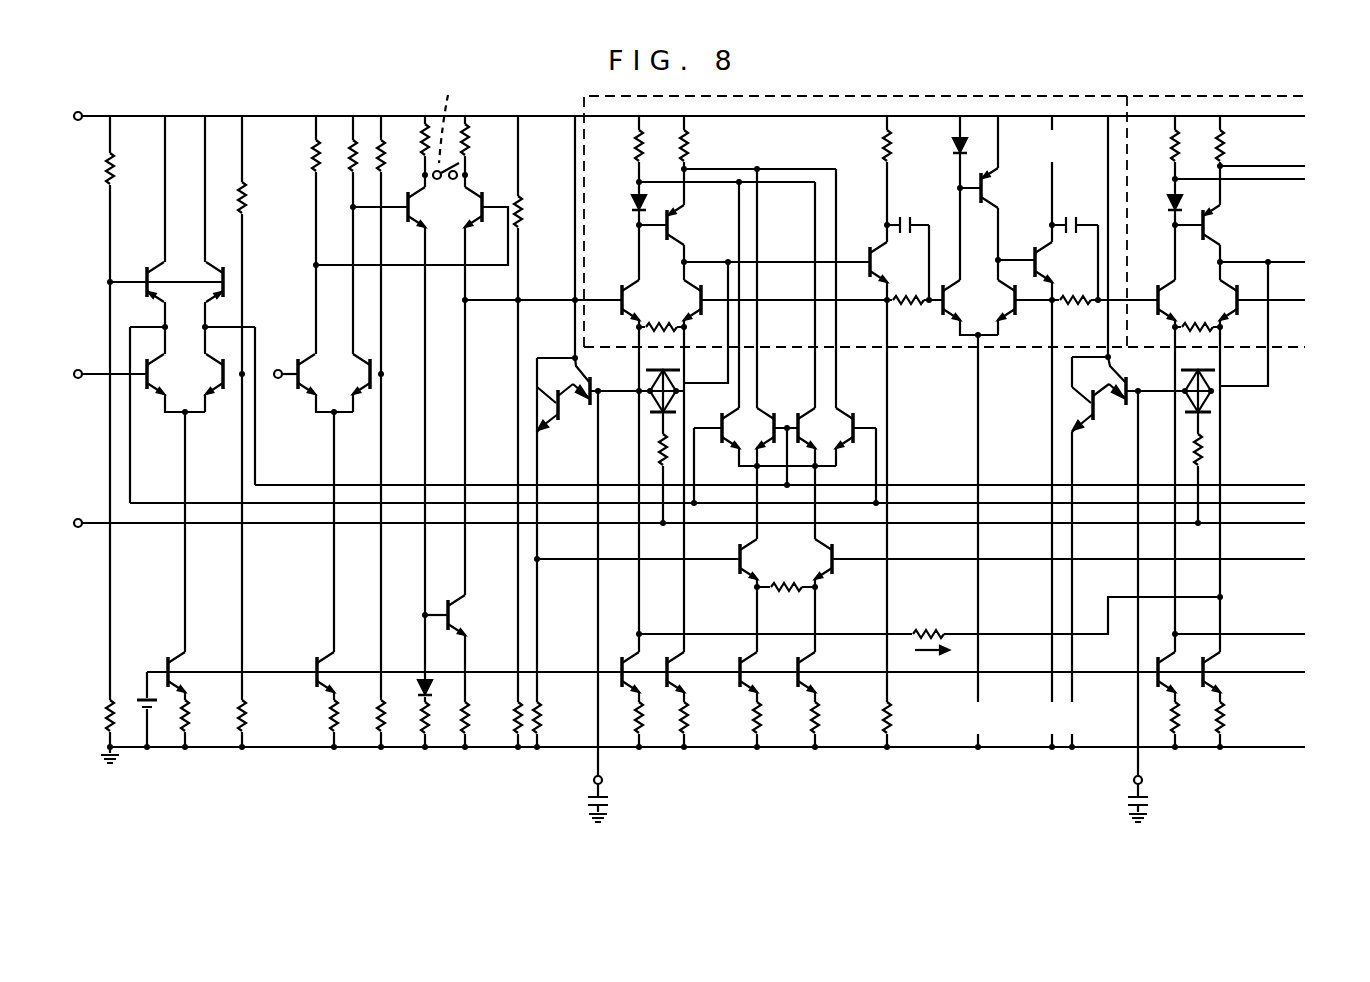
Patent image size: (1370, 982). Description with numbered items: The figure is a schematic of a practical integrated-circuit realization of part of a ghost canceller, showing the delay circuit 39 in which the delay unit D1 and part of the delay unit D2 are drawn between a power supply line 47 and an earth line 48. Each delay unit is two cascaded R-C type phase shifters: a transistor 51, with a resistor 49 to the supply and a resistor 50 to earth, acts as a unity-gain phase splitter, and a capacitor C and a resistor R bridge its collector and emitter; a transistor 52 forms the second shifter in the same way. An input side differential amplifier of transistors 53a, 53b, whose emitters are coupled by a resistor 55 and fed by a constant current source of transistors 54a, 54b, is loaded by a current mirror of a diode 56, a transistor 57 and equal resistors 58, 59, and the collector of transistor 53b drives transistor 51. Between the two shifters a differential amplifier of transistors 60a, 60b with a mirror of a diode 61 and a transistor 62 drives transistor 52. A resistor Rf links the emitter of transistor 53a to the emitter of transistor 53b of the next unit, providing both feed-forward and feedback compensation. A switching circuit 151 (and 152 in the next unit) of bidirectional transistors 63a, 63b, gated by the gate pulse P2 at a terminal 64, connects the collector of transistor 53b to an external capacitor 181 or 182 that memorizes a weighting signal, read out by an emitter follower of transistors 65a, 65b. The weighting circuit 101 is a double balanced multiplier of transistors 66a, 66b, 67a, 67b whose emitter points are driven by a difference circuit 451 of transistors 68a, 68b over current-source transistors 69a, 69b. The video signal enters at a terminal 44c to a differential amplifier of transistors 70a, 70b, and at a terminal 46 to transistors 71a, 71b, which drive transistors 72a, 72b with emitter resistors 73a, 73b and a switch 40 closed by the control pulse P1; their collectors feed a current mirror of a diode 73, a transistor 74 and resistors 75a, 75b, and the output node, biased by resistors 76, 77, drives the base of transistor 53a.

The power supply line 47 is at (156, 116).
The resistor 73a is at (419, 130).
The resistor 73b is at (468, 146).
The switch 40 is at (450, 194).
The transistor 72a is at (408, 214).
The transistor 72b is at (482, 216).
The resistor 76 is at (522, 222).
The terminal 44c is at (78, 380).
The transistor 70a is at (148, 396).
The transistor 70b is at (225, 396).
The terminal 46 is at (278, 370).
The transistor 71a is at (298, 396).
The transistor 71b is at (375, 396).
The terminal 64 is at (78, 527).
The earth line 48 is at (135, 750).
The transistor 74 is at (440, 602).
The diode 73 is at (418, 698).
The resistor 77 is at (514, 708).
The resistor 75a is at (436, 750).
The resistor 75b is at (472, 736).
The resistor 58 is at (630, 156).
The resistor 59 is at (686, 142).
The diode 56 is at (630, 212).
The transistor 57 is at (680, 214).
The resistor 55 is at (660, 322).
The transistor 53a is at (901, 313).
The transistor 53b is at (981, 313).
The weighting circuit 101 is at (808, 329).
The switching circuit 151 is at (736, 386).
The switching circuit 152 is at (1278, 388).
The transistor 65a is at (590, 390).
The transistor 65b is at (559, 424).
The transistor 63a is at (738, 448).
The transistor 63b is at (654, 424).
The transistor 66a is at (738, 486).
The transistor 66b is at (774, 408).
The transistor 67a is at (858, 442).
The transistor 67b is at (816, 400).
The difference circuit 451 is at (810, 570).
The transistor 68a is at (732, 580).
The transistor 68b is at (842, 580).
The transistor 69a is at (740, 690).
The transistor 69b is at (798, 690).
The resistor 50 is at (880, 716).
The transistor 54a is at (634, 724).
The transistor 54b is at (700, 724).
The capacitor 181 is at (610, 806).
The capacitor 182 is at (1150, 806).
The resistor 49 is at (868, 150).
The diode 61 is at (952, 150).
The transistor 62 is at (986, 194).
The transistor 51 is at (862, 248).
The transistor 52 is at (1042, 256).
The transistor 60a is at (940, 334).
The transistor 60b is at (1014, 334).
The delay circuit 39 is at (1062, 96).
The delay unit D1 is at (930, 96).
The delay unit D2 is at (1212, 96).
The control pulse P1 is at (454, 109).
The gate pulse P2 is at (142, 528).
The resistor Rf is at (929, 650).
The capacitor C is at (988, 206).
The resistor R is at (992, 318).